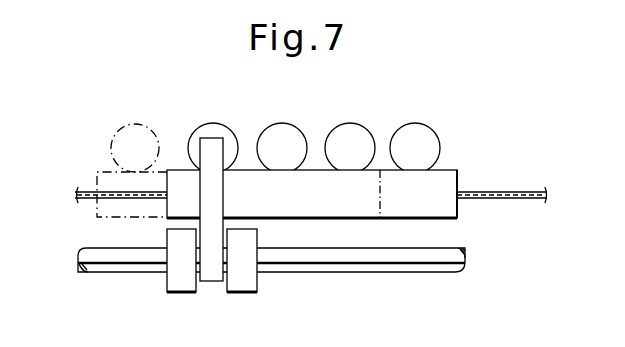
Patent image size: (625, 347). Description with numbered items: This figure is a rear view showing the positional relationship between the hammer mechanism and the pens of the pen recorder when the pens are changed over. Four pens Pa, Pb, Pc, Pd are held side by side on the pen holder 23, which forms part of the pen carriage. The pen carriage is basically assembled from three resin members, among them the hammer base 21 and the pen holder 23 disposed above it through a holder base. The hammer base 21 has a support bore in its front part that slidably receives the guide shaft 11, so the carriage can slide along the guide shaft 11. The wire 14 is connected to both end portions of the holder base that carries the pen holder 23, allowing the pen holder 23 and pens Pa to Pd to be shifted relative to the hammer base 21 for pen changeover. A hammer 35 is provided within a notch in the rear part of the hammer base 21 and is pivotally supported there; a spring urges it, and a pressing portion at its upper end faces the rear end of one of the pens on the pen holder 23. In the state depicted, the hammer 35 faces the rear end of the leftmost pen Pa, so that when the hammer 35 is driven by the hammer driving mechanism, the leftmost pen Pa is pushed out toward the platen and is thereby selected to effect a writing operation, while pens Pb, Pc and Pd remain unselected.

The leftmost pen Pa is at (212, 133).
The pen Pb is at (280, 137).
The pen Pc is at (352, 137).
The pen Pd is at (418, 137).
The pen holder 23 is at (438, 182).
The wire 14 is at (497, 192).
The guide shaft 11 is at (412, 274).
The hammer base 21 is at (180, 286).
The hammer 35 is at (215, 275).